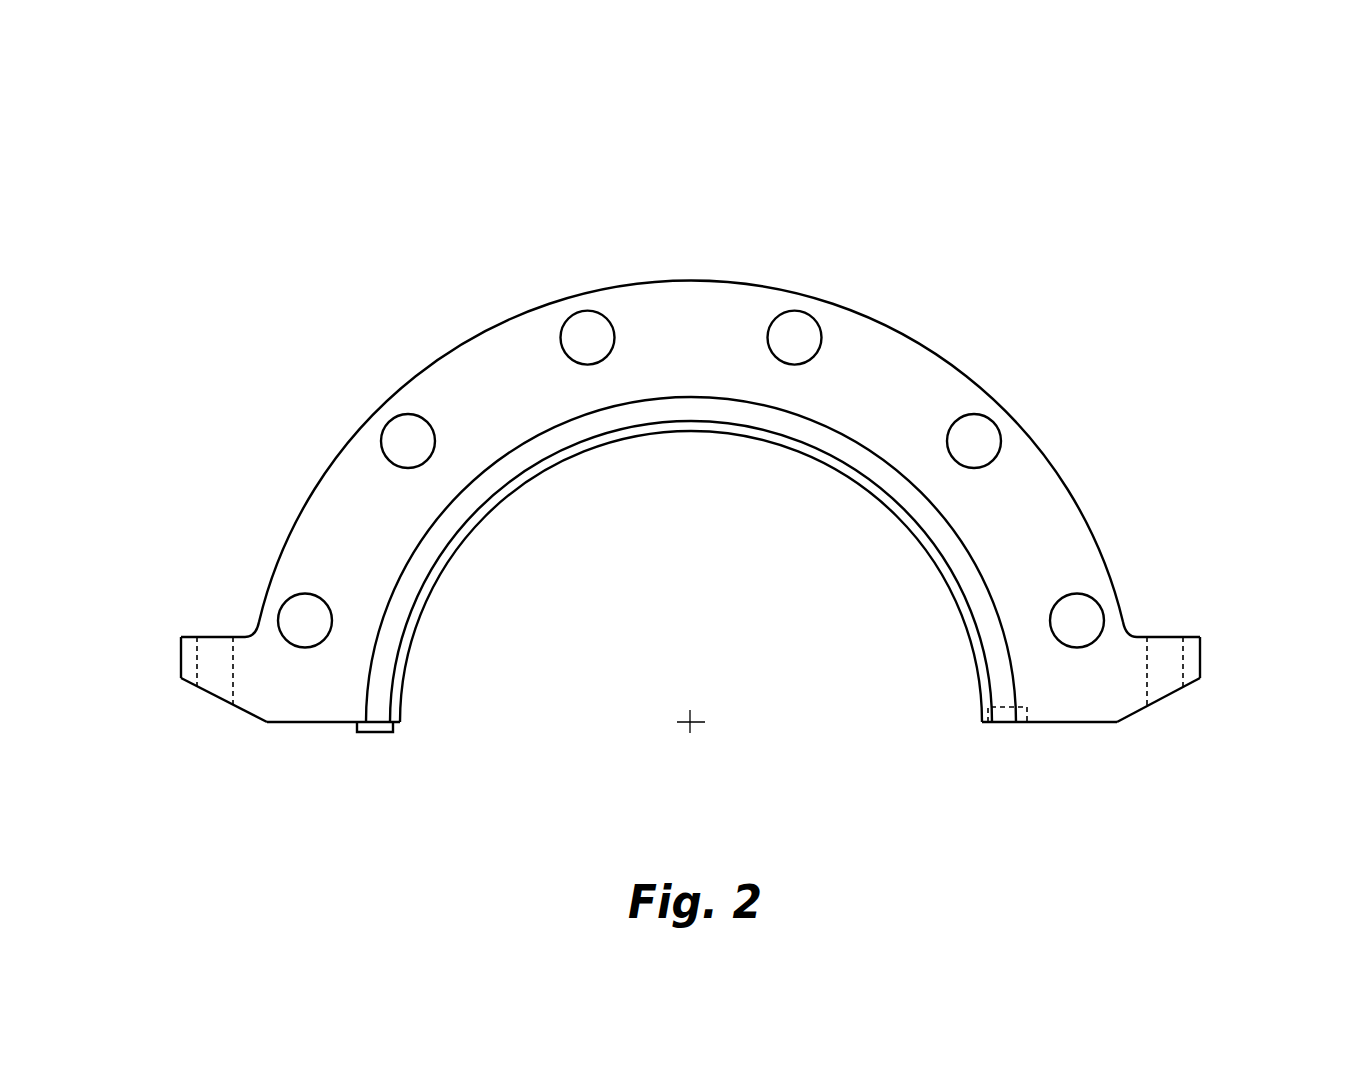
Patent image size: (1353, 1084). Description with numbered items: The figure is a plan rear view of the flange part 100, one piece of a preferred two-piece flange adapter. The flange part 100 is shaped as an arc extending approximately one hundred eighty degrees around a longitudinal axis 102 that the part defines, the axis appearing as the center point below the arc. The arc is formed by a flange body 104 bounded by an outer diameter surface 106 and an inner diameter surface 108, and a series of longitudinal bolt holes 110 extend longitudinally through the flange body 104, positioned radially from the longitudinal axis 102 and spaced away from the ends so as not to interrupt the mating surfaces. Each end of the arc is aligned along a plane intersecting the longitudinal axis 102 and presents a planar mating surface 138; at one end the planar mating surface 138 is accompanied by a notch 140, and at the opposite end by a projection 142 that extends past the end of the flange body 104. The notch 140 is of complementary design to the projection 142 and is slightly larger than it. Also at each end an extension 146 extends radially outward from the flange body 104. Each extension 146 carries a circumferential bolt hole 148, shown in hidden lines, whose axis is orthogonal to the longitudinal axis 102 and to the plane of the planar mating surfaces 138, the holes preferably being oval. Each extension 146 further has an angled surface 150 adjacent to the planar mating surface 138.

The flange part 100 is at (1213, 205).
The longitudinal axis 102 is at (692, 725).
The flange body 104 is at (1037, 483).
The outer diameter surface 106 is at (890, 325).
The inner diameter surface 108 is at (957, 555).
The longitudinal bolt holes 110 is at (967, 442).
The planar mating surface 138 is at (323, 723).
The notch 140 is at (1013, 722).
The projection 142 is at (383, 733).
The extension 146 is at (187, 662).
The circumferential bolt hole 148 is at (218, 655).
The angled surface 150 is at (243, 718).